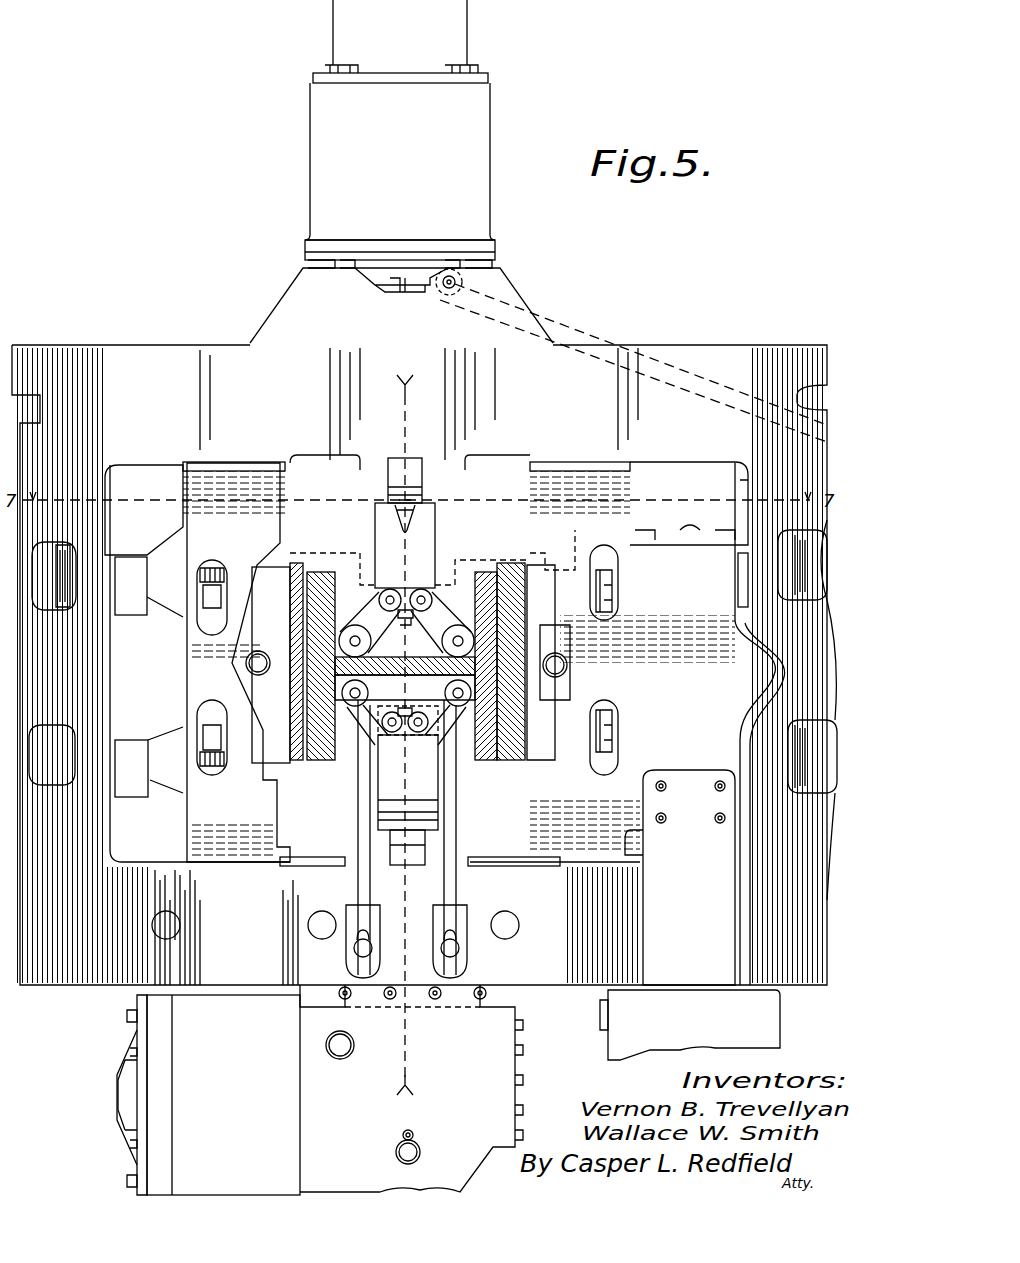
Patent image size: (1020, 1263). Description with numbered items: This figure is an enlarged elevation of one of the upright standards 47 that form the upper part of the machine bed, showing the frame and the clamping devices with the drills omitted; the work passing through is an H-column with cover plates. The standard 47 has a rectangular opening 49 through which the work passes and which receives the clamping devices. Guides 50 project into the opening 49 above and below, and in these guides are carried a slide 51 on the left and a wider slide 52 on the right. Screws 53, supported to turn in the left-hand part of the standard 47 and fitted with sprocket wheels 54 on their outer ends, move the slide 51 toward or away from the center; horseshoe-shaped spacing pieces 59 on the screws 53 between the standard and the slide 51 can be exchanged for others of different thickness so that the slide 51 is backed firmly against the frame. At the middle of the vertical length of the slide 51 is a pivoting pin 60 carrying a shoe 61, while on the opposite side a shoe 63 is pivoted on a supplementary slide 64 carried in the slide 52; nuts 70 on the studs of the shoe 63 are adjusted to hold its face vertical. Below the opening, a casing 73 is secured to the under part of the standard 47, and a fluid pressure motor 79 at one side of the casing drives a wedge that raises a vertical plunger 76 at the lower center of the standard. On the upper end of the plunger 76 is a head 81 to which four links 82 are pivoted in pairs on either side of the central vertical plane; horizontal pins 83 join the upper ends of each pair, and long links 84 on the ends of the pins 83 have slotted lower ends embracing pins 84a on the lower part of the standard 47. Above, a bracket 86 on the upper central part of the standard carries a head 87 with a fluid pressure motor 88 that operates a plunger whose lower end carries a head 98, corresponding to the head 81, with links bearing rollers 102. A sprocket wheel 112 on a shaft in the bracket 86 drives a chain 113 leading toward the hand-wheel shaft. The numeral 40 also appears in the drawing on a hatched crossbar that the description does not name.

The upright standard 47 is at (118, 345).
The rectangular opening 49 is at (145, 465).
The guides 50 is at (295, 462).
The slide 51 is at (287, 515).
The slide 52 is at (535, 535).
The screws 53 is at (210, 560).
The sprocket wheels 54 is at (70, 545).
The spacing pieces 59 is at (132, 615).
The pivoting pin 60 is at (246, 668).
The shoe 61 is at (268, 575).
The shoe 63 is at (540, 762).
The supplementary slide 64 is at (570, 683).
The nuts 70 is at (615, 588).
The casing 73 is at (411, 1088).
The vertical sliding shaft or plunger 76 is at (418, 858).
The fluid pressure motor 79 is at (208, 1095).
The head 81 is at (408, 782).
The links 82 is at (420, 735).
The horizontal pins 83 is at (352, 710).
The long links 84 is at (358, 800).
The pins 84a is at (445, 950).
The bracket 86 is at (401, 305).
The head 87 is at (462, 48).
The fluid pressure motor 88 is at (400, 166).
The head 98 is at (375, 545).
The rollers 102 is at (406, 623).
The sprocket wheel 112 is at (440, 298).
The chain 113 is at (598, 318).
The crossbar 40 is at (420, 665).